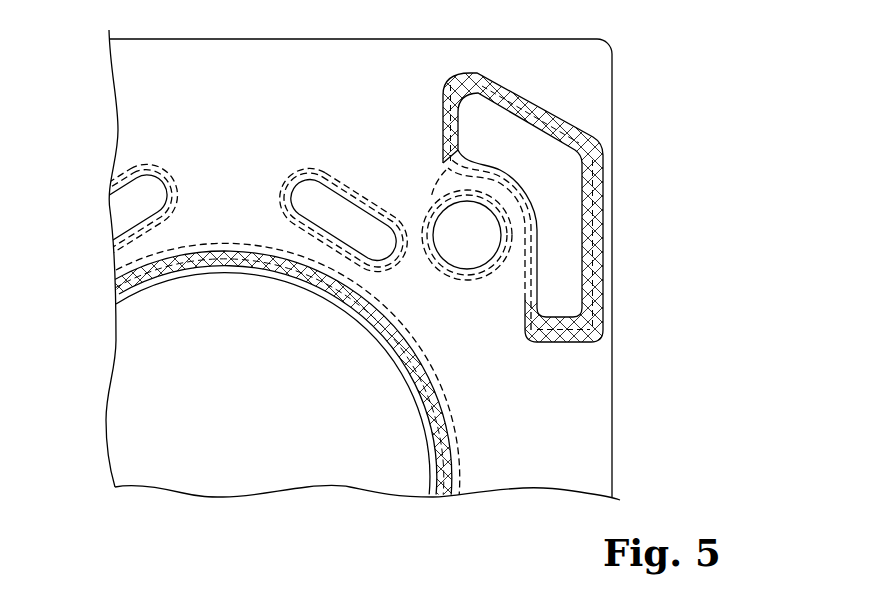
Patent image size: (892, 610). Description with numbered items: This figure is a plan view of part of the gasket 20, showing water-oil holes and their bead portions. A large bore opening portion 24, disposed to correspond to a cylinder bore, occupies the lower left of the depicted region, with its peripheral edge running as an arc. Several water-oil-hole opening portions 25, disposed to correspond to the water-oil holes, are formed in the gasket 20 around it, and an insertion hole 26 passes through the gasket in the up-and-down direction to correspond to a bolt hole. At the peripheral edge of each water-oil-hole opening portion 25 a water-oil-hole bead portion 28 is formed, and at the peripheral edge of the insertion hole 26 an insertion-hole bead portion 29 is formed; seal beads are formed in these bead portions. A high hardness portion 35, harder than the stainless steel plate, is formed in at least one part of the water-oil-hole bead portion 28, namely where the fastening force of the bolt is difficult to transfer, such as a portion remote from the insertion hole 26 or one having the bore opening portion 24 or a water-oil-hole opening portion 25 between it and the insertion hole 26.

The gasket 20 is at (613, 102).
The bore opening portion 24 is at (265, 425).
The water-oil-hole opening portion 25 is at (119, 215).
The insertion hole 26 is at (453, 248).
The water-oil-hole bead portion 28 is at (308, 167).
The insertion-hole bead portion 29 is at (445, 193).
The high hardness portion 35 is at (197, 243).